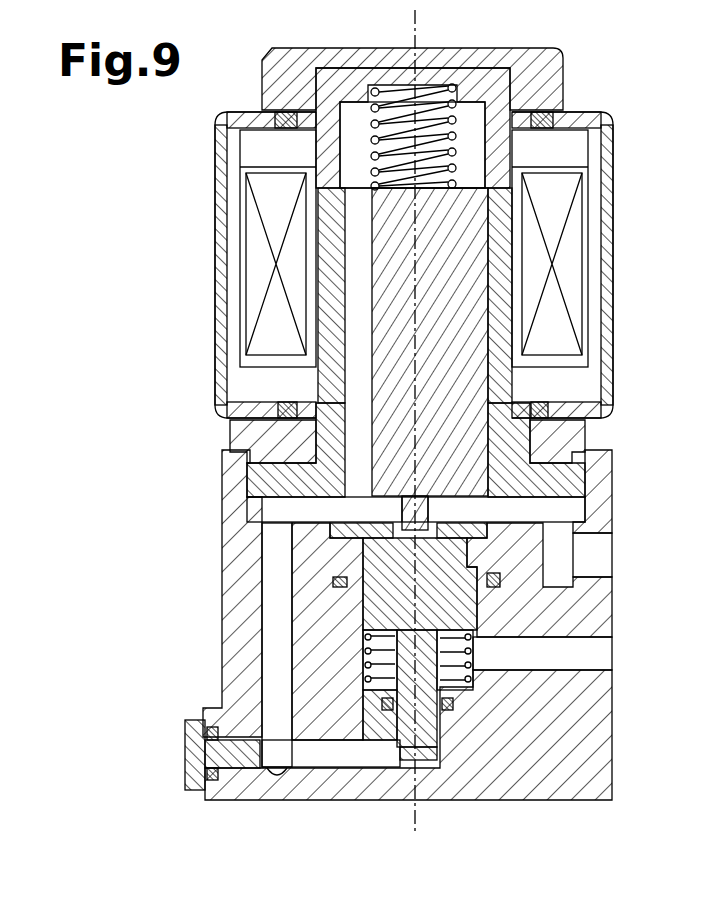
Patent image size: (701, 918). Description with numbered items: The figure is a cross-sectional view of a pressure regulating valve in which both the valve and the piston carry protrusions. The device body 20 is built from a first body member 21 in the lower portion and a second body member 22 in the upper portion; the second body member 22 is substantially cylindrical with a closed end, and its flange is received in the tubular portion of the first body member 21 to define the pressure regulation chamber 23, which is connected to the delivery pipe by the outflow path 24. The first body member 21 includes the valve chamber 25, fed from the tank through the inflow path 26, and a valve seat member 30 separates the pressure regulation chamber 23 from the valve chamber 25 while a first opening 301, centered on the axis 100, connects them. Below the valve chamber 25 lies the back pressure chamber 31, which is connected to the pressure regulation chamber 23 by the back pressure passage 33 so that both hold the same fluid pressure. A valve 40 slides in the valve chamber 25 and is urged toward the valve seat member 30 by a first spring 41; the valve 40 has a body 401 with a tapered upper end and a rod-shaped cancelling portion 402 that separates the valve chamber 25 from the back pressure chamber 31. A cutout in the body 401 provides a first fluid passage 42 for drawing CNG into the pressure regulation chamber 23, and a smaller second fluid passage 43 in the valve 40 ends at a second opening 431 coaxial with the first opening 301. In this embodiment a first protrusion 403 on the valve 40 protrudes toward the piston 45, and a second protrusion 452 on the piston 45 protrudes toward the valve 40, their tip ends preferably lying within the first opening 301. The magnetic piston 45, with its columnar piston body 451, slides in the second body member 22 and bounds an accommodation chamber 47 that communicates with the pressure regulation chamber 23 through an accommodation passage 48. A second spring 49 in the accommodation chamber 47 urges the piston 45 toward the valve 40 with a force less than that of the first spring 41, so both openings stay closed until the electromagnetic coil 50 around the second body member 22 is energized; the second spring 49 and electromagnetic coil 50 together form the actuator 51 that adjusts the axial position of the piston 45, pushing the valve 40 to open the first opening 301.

The axis 100 is at (421, 14).
The device body 20 is at (175, 427).
The first body member 21 is at (226, 470).
The second body member 22 is at (232, 422).
The pressure regulation chamber 23 is at (570, 512).
The outflow path 24 is at (604, 573).
The valve chamber 25 is at (383, 658).
The inflow path 26 is at (612, 668).
The valve seat member 30 is at (330, 556).
The back pressure chamber 31 is at (398, 752).
The back pressure passage 33 is at (266, 640).
The valve 40 is at (360, 608).
The first spring 41 is at (473, 631).
The first fluid passage 42 is at (472, 606).
The second fluid passage 43 is at (412, 762).
The piston 45 is at (485, 402).
The accommodation chamber 47 is at (355, 135).
The accommodation passage 48 is at (352, 389).
The second spring 49 is at (398, 86).
The electromagnetic coil 50 is at (250, 262).
The actuator 51 is at (573, 146).
The first opening 301 is at (405, 497).
The body 401 is at (350, 582).
The cancelling portion 402 is at (442, 727).
The first protrusion 403 is at (432, 507).
The second opening 431 is at (433, 498).
The piston body 451 is at (482, 315).
The second protrusion 452 is at (353, 473).